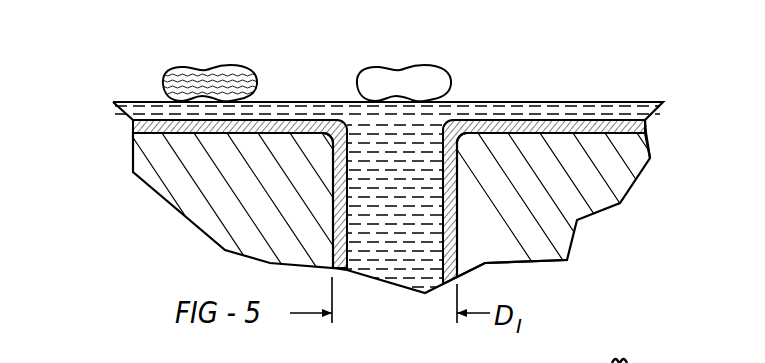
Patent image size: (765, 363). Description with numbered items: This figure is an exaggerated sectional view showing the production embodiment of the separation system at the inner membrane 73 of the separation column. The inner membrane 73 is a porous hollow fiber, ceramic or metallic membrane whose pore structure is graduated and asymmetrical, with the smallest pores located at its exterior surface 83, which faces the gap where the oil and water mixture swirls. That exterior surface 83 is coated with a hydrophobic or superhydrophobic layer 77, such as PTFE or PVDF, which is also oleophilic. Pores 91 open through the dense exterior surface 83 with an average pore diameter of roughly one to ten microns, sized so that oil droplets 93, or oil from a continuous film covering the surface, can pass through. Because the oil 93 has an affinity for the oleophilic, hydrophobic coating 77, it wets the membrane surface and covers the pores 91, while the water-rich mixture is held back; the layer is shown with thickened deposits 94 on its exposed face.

The contaminant particles 94 is at (222, 72).
The oil droplets 93 is at (597, 108).
The hydrophobic layer 77 is at (186, 128).
The exterior surface 83 is at (603, 133).
The inner membrane 73 is at (555, 186).
The pores 91 is at (392, 172).